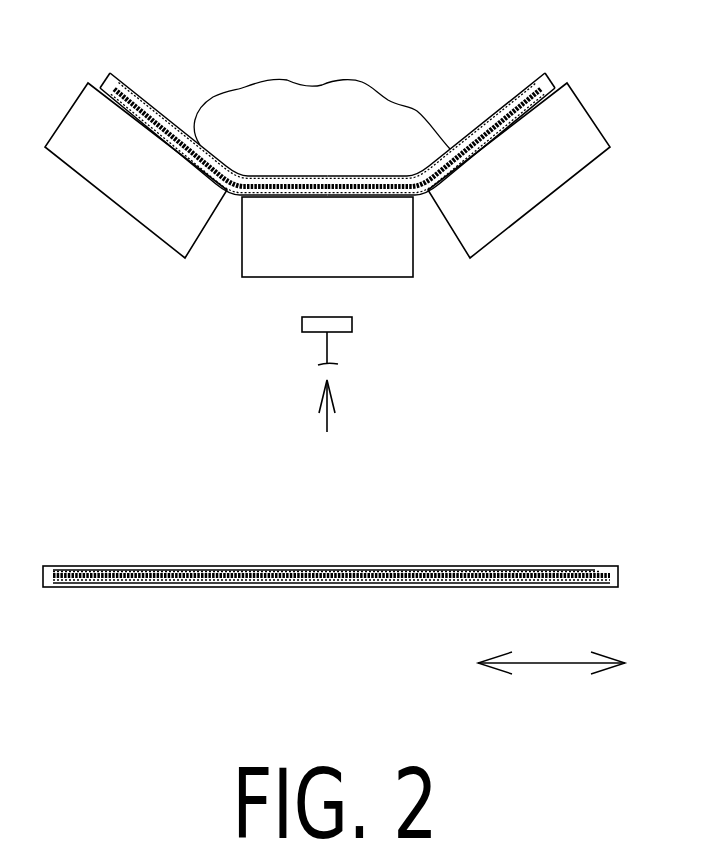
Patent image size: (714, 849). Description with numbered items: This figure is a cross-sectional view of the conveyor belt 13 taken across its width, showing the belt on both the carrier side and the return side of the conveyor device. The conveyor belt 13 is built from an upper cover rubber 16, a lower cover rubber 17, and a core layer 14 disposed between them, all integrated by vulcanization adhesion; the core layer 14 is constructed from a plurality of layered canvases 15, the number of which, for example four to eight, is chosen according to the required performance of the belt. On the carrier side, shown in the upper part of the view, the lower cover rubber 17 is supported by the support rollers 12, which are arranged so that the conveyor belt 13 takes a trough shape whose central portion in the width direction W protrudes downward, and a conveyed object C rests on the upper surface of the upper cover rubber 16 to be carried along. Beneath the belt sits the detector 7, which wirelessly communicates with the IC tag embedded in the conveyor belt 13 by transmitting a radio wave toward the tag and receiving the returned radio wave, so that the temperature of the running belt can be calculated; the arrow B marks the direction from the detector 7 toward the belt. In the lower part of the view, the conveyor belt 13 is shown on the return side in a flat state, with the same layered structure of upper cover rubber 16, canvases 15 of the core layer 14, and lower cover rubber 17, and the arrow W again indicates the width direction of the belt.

The detector 7 is at (340, 333).
The support rollers 12 is at (158, 228).
The conveyor belt 13 is at (173, 118).
The core layer 14 is at (488, 128).
The canvases 15 is at (357, 182).
The upper cover rubber 16 is at (210, 158).
The lower cover rubber 17 is at (311, 197).
The conveyed object C is at (390, 113).
The pressing direction B is at (327, 428).
The width direction W is at (551, 651).